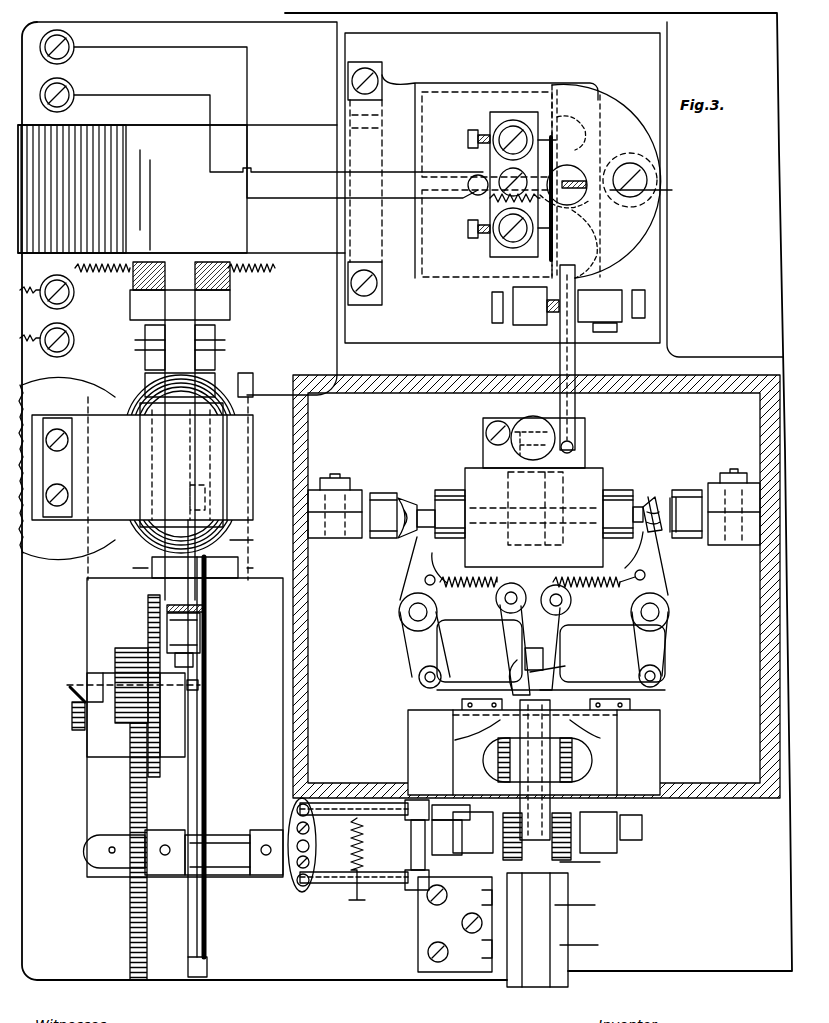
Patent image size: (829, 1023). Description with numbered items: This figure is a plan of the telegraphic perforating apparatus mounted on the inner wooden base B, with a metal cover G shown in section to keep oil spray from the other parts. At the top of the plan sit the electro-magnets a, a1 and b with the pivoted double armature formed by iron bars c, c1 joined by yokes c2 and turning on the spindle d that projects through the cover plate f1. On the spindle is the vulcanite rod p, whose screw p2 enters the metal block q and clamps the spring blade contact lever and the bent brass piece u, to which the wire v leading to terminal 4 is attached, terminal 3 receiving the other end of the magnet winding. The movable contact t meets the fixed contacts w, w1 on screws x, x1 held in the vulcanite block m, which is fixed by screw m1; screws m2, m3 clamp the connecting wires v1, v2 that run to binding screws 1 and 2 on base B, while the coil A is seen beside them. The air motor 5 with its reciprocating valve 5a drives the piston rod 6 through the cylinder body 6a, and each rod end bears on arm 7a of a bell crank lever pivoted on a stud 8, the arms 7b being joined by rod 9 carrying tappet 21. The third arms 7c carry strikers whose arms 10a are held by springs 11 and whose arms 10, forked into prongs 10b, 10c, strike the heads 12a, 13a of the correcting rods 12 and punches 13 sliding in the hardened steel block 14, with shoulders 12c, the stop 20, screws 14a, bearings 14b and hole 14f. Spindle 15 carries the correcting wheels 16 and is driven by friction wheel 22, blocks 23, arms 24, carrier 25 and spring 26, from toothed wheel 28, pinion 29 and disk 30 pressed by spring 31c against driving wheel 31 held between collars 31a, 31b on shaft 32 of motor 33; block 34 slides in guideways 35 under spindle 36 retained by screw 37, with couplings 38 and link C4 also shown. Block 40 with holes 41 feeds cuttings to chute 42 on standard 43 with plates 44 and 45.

The binding screw 1 is at (74, 52).
The binding screw 2 is at (72, 92).
The terminal 3 is at (74, 292).
The terminal 4 is at (74, 340).
The coil A is at (181, 189).
The wooden base B is at (478, 188).
The metal cover G is at (440, 380).
The air motor 5 is at (572, 479).
The reciprocating valve 5a is at (533, 420).
The piston rod 6 is at (435, 520).
The body 6a is at (534, 517).
The bell crank lever arm 7a is at (534, 548).
The bell crank lever arm 7b is at (480, 632).
The bell crank lever arm 7c is at (542, 634).
The stud 8 is at (418, 612).
The rod 9 is at (636, 670).
The striker arm 10 is at (534, 650).
The striker arm 10a is at (528, 576).
The prong 10b is at (551, 687).
The prong 10c is at (497, 671).
The spring 11 is at (535, 588).
The correcting rod 12 is at (498, 758).
The head of correcting rod 12a is at (528, 725).
The shoulder 12c is at (535, 752).
The punch 13 is at (537, 770).
The head of punch 13a is at (551, 719).
The hardened steel block 14 is at (534, 752).
The screw 14a is at (539, 722).
The bearing 14b is at (535, 832).
The hole 14f is at (604, 787).
The spindle 15 is at (447, 844).
The correcting wheel 16 is at (571, 860).
The fixed stop 20 is at (532, 649).
The tappet 21 is at (566, 661).
The friction wheel 22 is at (451, 813).
The friction block 23 is at (410, 898).
The arm 24 is at (385, 845).
The rotary carrier 25 is at (316, 830).
The adjustable spring 26 is at (366, 859).
The toothed wheel 28 is at (147, 895).
The pinion 29 is at (120, 683).
The friction disk 30 is at (148, 618).
The frictional driving wheel 31 is at (200, 643).
The collar 31a is at (200, 660).
The collar 31b is at (200, 630).
The spring 31c is at (59, 708).
The shaft 32 is at (203, 608).
The motor 33 is at (142, 476).
The block 34 is at (252, 541).
The guideway 35 is at (190, 569).
The spindle 36 is at (207, 712).
The fixed screw 37 is at (205, 835).
The roller 38 is at (390, 495).
The block 40 is at (537, 930).
The hole 41 is at (586, 909).
The chute 42 is at (589, 936).
The standard 43 is at (455, 924).
The plate 44 is at (593, 880).
The plate 45 is at (625, 840).
The link bar C4 is at (578, 398).
The electro-magnet a is at (442, 253).
The electro-magnet a1 is at (445, 123).
The electro-magnet b is at (548, 140).
The armature bar c is at (576, 257).
The armature bar c1 is at (573, 101).
The yoke c2 is at (568, 160).
The spindle d is at (607, 240).
The cover plate f1 is at (622, 92).
The vulcanite block m is at (514, 173).
The screw m1 is at (474, 194).
The screw m2 is at (513, 140).
The screw m3 is at (502, 238).
The vulcanite rod p is at (630, 180).
The screw p2 is at (651, 181).
The metal block q is at (578, 170).
The movable contact t is at (547, 202).
The bent piece of brass u is at (610, 213).
The wire v is at (513, 182).
The connecting wire v1 is at (289, 187).
The connecting wire v2 is at (289, 161).
The fixed contact w is at (518, 267).
The fixed contact w1 is at (531, 97).
The contact screw x is at (472, 251).
The contact screw x1 is at (454, 153).